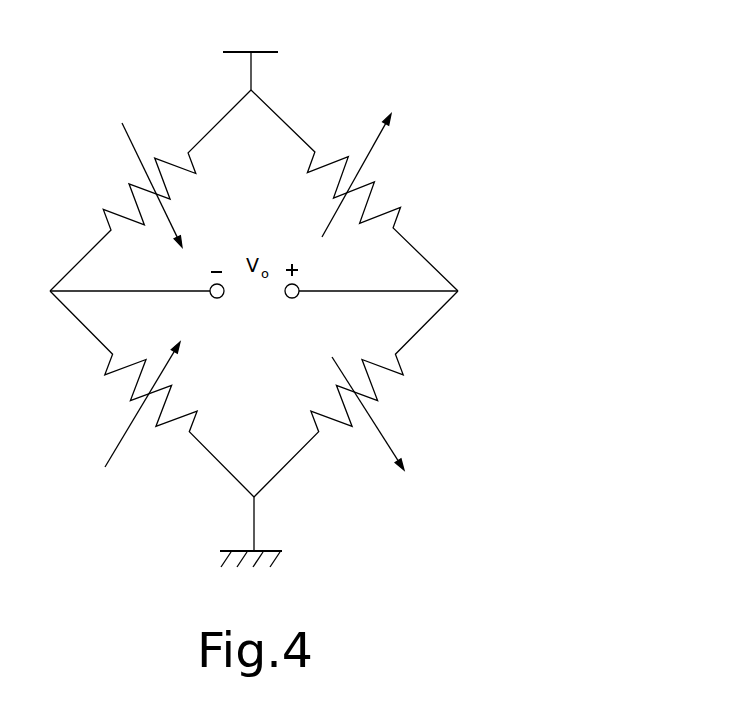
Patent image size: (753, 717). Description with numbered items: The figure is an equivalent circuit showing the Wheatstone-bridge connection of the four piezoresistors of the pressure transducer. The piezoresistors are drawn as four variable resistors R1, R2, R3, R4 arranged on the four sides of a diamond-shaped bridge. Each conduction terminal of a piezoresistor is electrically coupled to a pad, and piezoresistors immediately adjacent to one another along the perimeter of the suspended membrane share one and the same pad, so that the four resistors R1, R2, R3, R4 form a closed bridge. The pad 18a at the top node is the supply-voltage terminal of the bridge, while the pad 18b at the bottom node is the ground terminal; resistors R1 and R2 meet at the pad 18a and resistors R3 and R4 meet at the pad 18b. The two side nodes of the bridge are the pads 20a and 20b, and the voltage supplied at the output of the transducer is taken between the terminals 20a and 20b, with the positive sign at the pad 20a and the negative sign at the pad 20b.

The pad 18a is at (270, 54).
The pad 18b is at (228, 559).
The pad 20a is at (290, 298).
The pad 20b is at (214, 298).
The first bridge resistor R1 is at (150, 190).
The second bridge resistor R2 is at (354, 190).
The third bridge resistor R3 is at (152, 394).
The fourth bridge resistor R4 is at (356, 394).